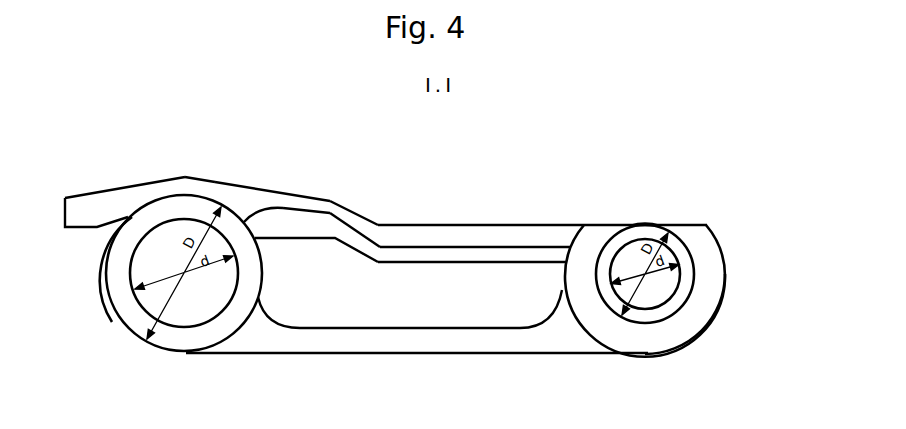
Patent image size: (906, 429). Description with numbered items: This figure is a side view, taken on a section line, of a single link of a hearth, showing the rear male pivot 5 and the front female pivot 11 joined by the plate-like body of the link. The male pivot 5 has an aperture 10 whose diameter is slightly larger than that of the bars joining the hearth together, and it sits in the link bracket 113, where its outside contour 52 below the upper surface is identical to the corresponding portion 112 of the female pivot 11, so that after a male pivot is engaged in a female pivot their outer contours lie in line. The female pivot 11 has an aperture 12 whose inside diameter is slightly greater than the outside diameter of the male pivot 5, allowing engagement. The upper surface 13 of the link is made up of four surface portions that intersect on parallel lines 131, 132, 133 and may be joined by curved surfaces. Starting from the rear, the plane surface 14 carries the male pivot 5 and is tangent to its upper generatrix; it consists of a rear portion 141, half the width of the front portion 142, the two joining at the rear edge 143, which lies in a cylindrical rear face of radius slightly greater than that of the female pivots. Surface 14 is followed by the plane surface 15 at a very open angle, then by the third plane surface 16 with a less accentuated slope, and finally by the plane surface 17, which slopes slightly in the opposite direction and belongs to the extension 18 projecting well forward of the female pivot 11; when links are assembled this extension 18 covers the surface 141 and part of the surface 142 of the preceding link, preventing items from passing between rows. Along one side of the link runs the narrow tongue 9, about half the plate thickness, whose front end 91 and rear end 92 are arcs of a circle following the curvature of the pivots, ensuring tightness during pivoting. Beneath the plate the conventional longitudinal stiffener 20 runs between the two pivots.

The extension 18 is at (83, 208).
The plane surface 17 is at (120, 190).
The intersection line 133 is at (185, 173).
The third plane surface 16 is at (233, 184).
The front end of the tongue 91 is at (283, 206).
The tongue 9 is at (302, 222).
The intersection line 132 is at (330, 202).
The plane surface 15 is at (360, 212).
The intersection line 131 is at (383, 223).
The upper surface of the link 13 is at (447, 223).
The front portion of surface 14 142 is at (498, 223).
The plane surface carrying the male pivots 14 is at (540, 223).
The rear edge of portion 142 143 is at (570, 227).
The rear portion of surface 14 141 is at (665, 237).
The aperture of the male pivots 10 is at (663, 255).
The outside contour of the male pivot 52 is at (725, 265).
The rear male pivot 5 is at (678, 298).
The link bracket 113 is at (703, 330).
The front female pivot 11 is at (112, 265).
The portion of the female pivot 112 is at (115, 315).
The aperture of the female pivot 12 is at (177, 320).
The longitudinal stiffener 20 is at (268, 335).
The rear end of the tongue 92 is at (572, 313).